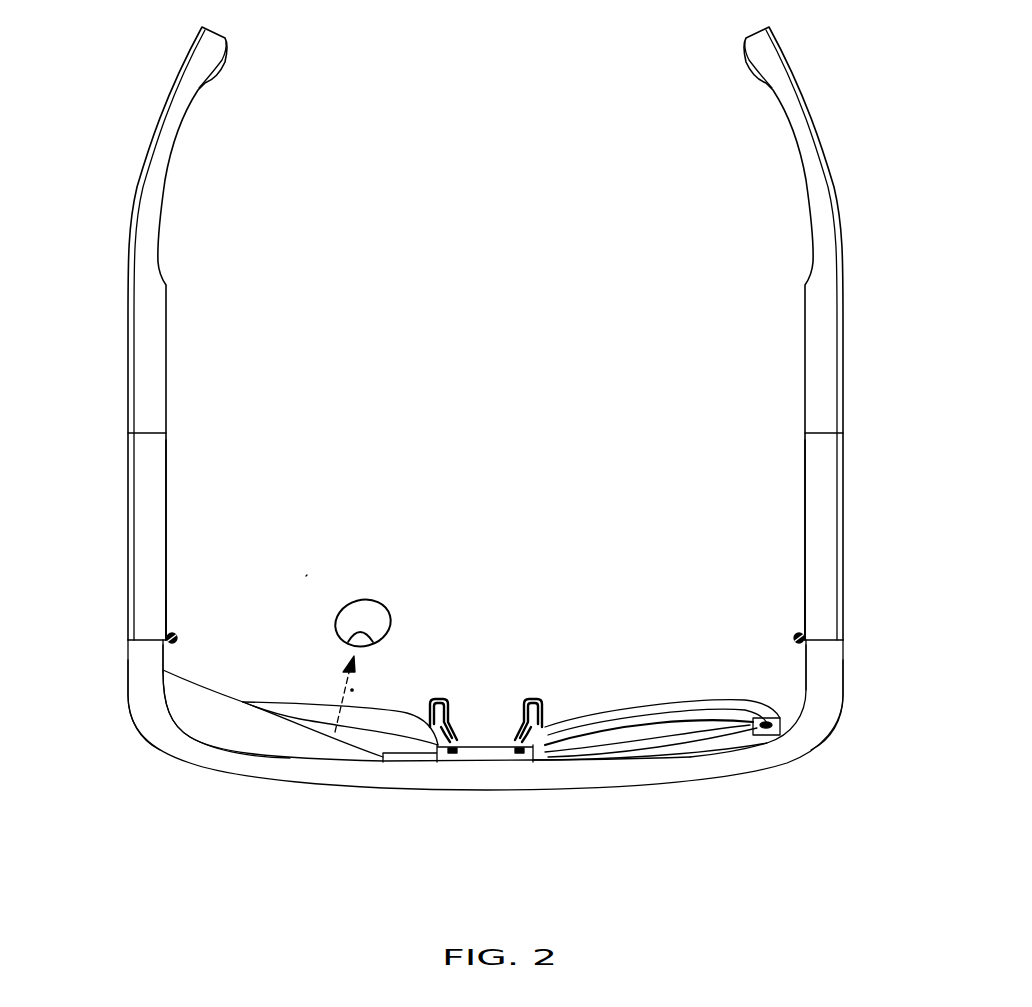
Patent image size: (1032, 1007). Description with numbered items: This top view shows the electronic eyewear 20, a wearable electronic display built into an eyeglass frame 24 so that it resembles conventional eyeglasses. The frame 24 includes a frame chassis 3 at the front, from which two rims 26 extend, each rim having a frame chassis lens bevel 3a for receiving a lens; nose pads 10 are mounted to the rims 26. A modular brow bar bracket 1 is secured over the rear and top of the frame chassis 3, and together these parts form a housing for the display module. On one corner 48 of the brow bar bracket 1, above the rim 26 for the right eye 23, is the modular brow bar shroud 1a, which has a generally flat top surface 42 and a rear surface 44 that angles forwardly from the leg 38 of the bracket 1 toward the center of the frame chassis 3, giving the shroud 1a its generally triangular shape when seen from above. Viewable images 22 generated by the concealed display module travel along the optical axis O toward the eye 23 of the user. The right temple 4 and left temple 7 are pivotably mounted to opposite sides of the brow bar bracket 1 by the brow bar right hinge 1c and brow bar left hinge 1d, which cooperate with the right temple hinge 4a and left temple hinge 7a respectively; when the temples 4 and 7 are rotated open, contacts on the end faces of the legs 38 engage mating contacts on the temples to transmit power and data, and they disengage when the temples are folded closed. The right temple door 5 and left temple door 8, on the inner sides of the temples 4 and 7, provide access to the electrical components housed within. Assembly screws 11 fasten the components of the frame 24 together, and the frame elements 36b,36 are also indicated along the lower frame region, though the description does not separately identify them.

The electronic eyewear 20 is at (667, 157).
The modular brow bar bracket 1 is at (710, 773).
The modular brow bar shroud 1a is at (250, 727).
The brow bar right hinge 1c is at (165, 662).
The brow bar left hinge 1d is at (803, 660).
The frame chassis 3 is at (417, 770).
The frame chassis lens bevel 3a is at (620, 723).
The right temple 4 is at (166, 433).
The right temple hinge 4a is at (167, 627).
The right temple door 5 is at (166, 524).
The left temple 7 is at (806, 433).
The left temple hinge 7a is at (805, 630).
The left temple door 8 is at (805, 530).
The nose pads 10 is at (522, 713).
The assembly screws 11 is at (166, 608).
The viewable images 22 is at (337, 688).
The eye 23 is at (380, 600).
The eyeglass frame 24 is at (758, 767).
The rims 26 is at (408, 713).
The rim lower portion 36b,36 is at (637, 777).
The leg 38 is at (142, 693).
The top surface 42 is at (200, 723).
The rear surface 44 is at (213, 687).
The corner 48 is at (307, 574).
The optical axis O is at (352, 690).